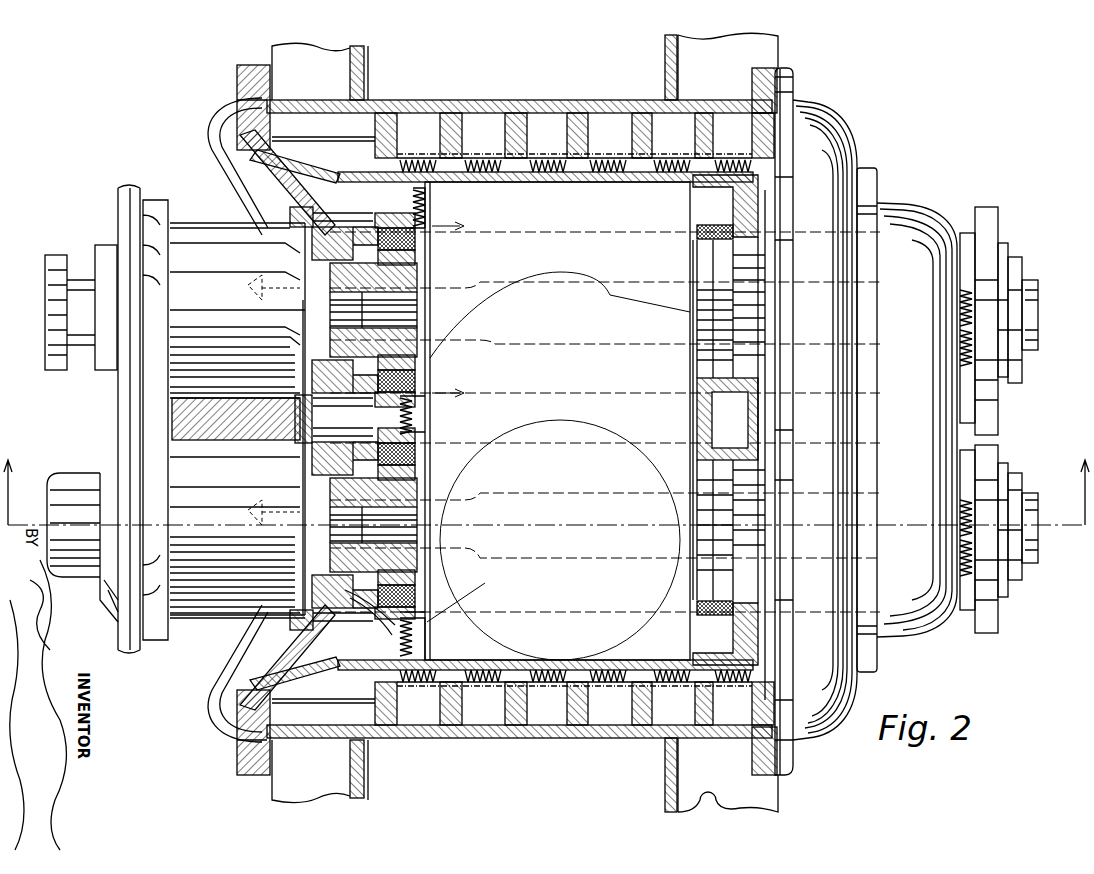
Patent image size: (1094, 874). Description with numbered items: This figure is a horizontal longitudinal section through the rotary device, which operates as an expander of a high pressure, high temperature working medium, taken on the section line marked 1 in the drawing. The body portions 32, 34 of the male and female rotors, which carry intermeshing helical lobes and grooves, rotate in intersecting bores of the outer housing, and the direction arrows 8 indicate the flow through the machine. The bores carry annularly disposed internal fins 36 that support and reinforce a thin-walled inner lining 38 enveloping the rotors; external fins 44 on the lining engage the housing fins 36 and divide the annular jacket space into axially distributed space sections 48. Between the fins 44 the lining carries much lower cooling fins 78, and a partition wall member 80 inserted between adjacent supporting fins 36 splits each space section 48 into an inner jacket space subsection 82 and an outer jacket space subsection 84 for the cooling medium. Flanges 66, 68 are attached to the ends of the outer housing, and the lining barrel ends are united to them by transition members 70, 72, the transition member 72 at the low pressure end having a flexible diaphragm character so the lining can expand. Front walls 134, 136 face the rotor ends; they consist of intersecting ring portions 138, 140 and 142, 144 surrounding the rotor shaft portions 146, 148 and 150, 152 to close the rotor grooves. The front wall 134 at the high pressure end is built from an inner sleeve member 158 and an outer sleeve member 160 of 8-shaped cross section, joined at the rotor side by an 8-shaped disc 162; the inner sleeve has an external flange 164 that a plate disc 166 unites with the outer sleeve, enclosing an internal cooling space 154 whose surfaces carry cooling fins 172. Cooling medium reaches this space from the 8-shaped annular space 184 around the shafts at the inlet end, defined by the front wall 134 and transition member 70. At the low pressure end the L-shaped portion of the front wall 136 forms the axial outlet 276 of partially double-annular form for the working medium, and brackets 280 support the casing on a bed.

The section line 1- 1 is at (546, 482).
The direction arrows 8 is at (464, 308).
The male rotor body portion 32 is at (556, 376).
The female rotor body portion 34 is at (566, 594).
The annular fins of outer housing 36 is at (388, 120).
The inner lining 38 is at (605, 150).
The external fins of inner lining 44 is at (596, 150).
The space sections 48 is at (545, 135).
The flange 66 is at (258, 70).
The flange 68 is at (793, 100).
The transition member 70 is at (240, 140).
The transition member 72 is at (830, 110).
The cooling fins 78 is at (470, 160).
The partition wall member 80 is at (520, 660).
The inner jacket space subsection 82 is at (618, 672).
The outer jacket space subsection 84 is at (555, 700).
The front wall 134 is at (422, 458).
The front wall 136 is at (697, 418).
The ring portion 138 is at (428, 195).
The ring portion 140 is at (425, 630).
The ring portion 142 is at (697, 228).
The ring portion 144 is at (690, 575).
The rotor shaft portion 146 is at (325, 330).
The rotor shaft portion 148 is at (295, 508).
The rotor shaft portion 150 is at (770, 322).
The rotor shaft portion 152 is at (770, 500).
The internal cooling space 154 is at (428, 232).
The inner sleeve member 158 is at (495, 450).
The outer sleeve member 160 is at (345, 184).
The disc 162 is at (480, 182).
The external flange 164 is at (305, 450).
The plate disc 166 is at (395, 642).
The cooling fins 172 is at (456, 591).
The 8-shaped annular space 184 is at (280, 205).
The axial outlet 276 is at (720, 200).
The brackets 280 is at (333, 70).